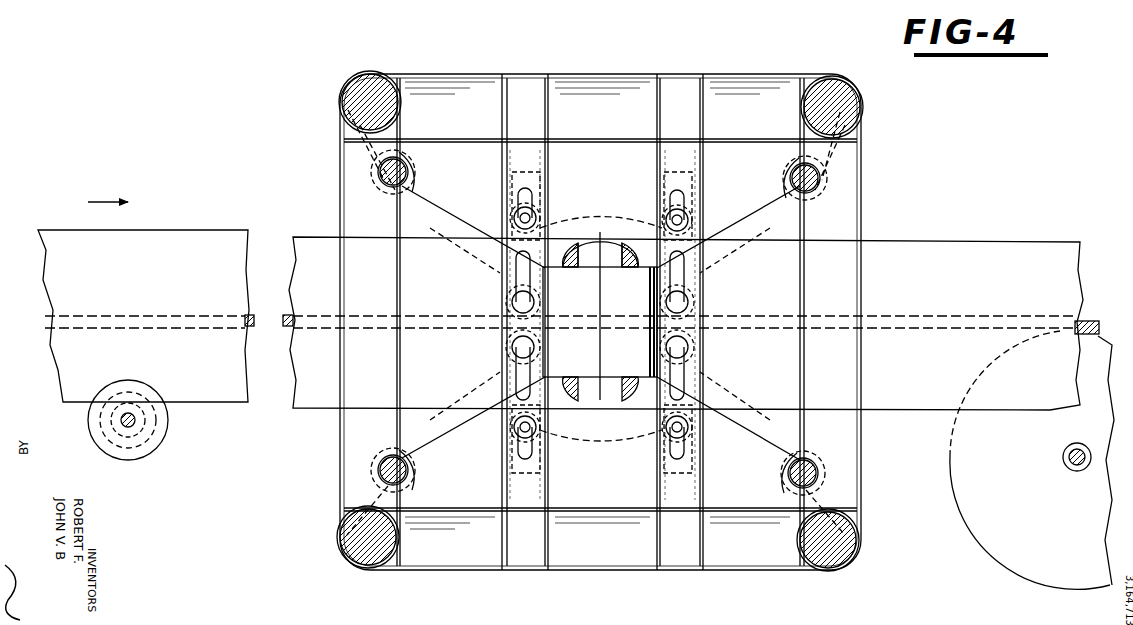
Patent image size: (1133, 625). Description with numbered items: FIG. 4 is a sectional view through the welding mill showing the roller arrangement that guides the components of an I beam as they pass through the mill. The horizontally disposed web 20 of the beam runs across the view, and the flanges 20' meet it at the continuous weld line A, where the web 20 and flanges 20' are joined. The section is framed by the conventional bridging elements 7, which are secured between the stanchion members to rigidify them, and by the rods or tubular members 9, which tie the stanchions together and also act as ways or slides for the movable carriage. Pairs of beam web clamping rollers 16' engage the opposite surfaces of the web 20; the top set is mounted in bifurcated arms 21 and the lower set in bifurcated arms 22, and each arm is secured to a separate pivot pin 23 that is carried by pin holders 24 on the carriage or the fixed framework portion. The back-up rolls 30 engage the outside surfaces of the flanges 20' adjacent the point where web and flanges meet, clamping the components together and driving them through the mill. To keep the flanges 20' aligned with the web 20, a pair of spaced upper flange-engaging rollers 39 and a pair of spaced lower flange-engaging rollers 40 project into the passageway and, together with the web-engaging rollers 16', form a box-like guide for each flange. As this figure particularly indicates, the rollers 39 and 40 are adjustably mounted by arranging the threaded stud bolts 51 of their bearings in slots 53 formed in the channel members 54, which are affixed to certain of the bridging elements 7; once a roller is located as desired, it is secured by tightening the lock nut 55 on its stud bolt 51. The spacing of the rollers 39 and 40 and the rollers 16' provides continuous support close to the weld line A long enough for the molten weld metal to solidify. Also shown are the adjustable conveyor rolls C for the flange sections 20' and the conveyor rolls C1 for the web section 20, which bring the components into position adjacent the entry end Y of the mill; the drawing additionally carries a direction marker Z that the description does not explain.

The bridging elements 7 is at (590, 75).
The rods or tubular members 9 is at (368, 88).
The beam web clamping rollers 16' is at (627, 325).
The web 20 is at (560, 304).
The flanges 20' is at (560, 304).
The bifurcated arms 21 is at (450, 198).
The bifurcated arms 22 is at (450, 448).
The pivot pin 23 is at (402, 170).
The pin holders 24 is at (350, 146).
The back-up rolls 30 is at (632, 302).
The upper flange-engaging rollers 39 is at (601, 217).
The lower flange-engaging rollers 40 is at (601, 440).
The threaded stud bolts 51 is at (535, 212).
The slots 53 is at (530, 196).
The channel members 54 is at (502, 108).
The lock nut 55 is at (514, 212).
The weld line A is at (1079, 320).
The conveyor rolls C is at (142, 445).
The conveyor rolls C1 is at (978, 518).
The entry end Y is at (300, 192).
The view direction arrow Z is at (872, 230).